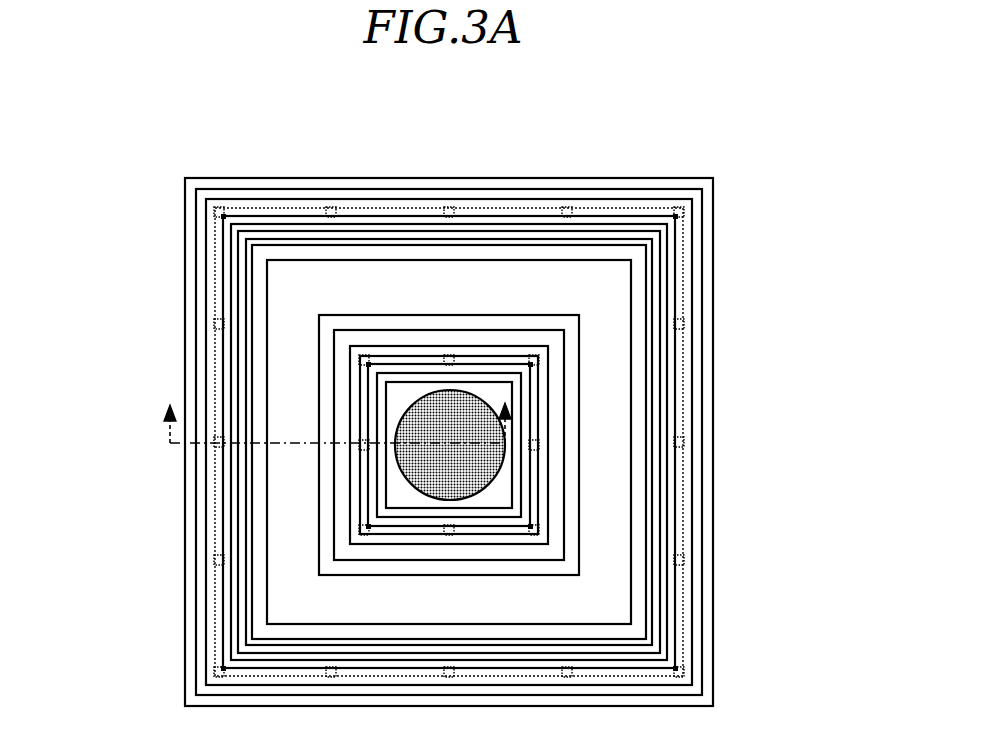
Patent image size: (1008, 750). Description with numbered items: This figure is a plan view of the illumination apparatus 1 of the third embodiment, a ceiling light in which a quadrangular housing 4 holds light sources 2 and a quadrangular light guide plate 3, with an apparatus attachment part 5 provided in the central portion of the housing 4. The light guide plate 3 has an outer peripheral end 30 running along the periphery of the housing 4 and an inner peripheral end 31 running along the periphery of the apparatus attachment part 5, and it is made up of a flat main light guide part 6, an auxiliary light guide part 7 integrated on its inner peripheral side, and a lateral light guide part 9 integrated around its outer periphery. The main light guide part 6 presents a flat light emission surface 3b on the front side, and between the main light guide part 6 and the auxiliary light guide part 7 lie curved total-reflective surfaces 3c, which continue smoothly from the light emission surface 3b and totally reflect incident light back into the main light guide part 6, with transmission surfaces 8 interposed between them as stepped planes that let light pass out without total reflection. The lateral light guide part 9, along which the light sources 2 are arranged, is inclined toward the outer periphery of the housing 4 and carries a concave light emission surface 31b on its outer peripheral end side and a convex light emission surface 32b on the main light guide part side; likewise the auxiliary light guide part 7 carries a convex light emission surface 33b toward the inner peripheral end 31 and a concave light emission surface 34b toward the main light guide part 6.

The illumination apparatus 1 is at (756, 134).
The light sources 2 is at (453, 353).
The light guide plate 3 is at (800, 322).
The light emission surface 3b is at (290, 305).
The total-reflective surface 3c is at (250, 375).
The housing 4 is at (707, 237).
The apparatus attachment part 5 is at (428, 470).
The main light guide part 6 is at (593, 400).
The auxiliary light guide part 7 is at (525, 457).
The transmission surfaces 8 is at (227, 353).
The lateral light guide part 9 is at (528, 487).
The outer peripheral end 30 is at (193, 480).
The inner peripheral end 31 is at (378, 462).
The concave light emission surface 31b is at (202, 633).
The convex light emission surface 32b is at (213, 660).
The convex light emission surface 33b is at (412, 380).
The concave light emission surface 34b is at (397, 372).